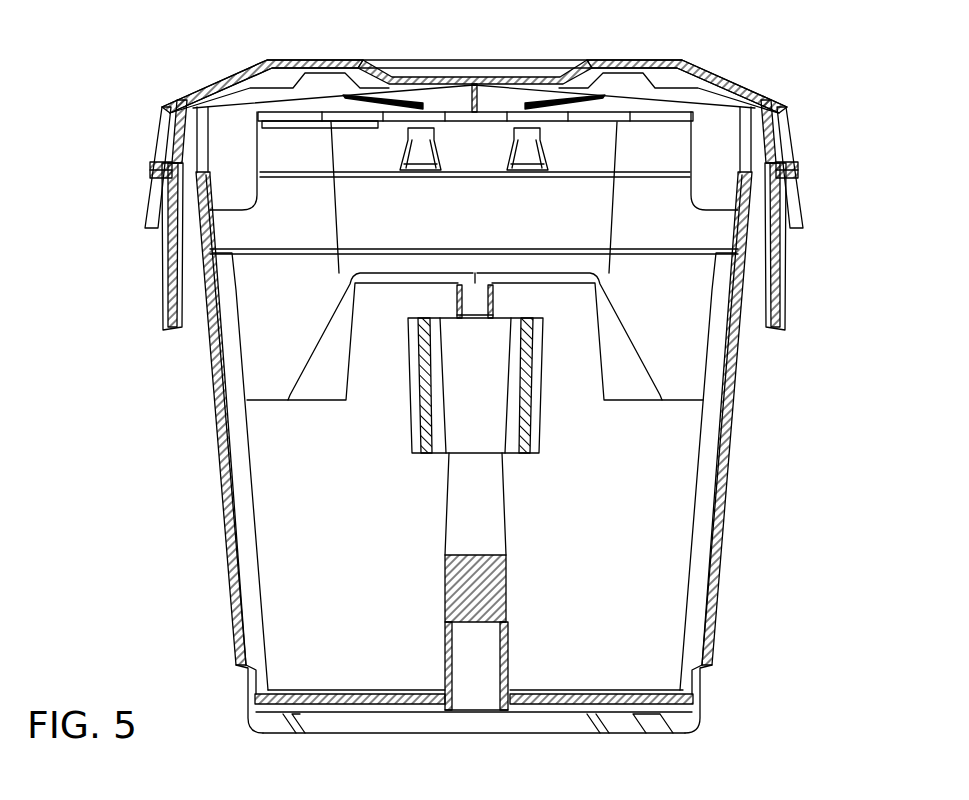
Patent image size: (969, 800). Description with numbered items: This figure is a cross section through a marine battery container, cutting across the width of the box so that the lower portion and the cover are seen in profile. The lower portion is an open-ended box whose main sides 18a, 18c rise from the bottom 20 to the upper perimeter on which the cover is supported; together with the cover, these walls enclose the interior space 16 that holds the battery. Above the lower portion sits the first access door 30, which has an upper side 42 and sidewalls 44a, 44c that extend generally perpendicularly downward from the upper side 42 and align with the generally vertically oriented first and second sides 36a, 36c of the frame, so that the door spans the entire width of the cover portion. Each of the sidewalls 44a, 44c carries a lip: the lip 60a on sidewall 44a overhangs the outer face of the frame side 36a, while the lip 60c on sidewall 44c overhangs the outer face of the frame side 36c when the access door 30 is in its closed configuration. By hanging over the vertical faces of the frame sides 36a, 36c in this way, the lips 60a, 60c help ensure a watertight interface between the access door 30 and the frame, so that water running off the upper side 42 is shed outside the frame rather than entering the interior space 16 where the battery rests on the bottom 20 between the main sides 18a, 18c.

The interior space 16 is at (474, 483).
The main side 18a is at (707, 595).
The main side 18c is at (240, 568).
The bottom 20 is at (613, 702).
The first access door 30 is at (472, 167).
The first side of the frame 36a is at (780, 233).
The second side of the frame 36c is at (170, 228).
The upper side 42 is at (533, 78).
The sidewall 44a is at (770, 132).
The sidewall 44c is at (177, 132).
The lip 60a is at (782, 165).
The lip 60c is at (163, 170).